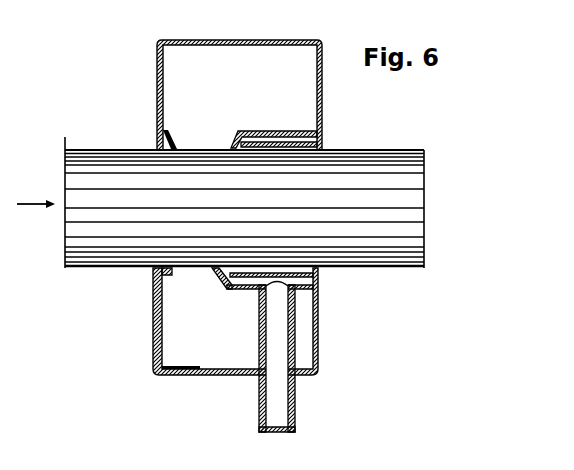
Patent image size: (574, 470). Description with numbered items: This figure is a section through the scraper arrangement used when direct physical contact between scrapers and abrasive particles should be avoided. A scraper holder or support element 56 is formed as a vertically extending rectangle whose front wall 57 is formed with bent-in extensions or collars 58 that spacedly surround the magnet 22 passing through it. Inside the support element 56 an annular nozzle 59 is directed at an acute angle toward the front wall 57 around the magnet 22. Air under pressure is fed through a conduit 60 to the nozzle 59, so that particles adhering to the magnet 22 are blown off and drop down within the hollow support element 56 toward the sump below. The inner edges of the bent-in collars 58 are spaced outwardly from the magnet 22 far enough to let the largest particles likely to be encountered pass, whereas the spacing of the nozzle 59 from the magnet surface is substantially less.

The magnet 22 is at (93, 168).
The scraper holder or support element 56 is at (318, 352).
The front wall 57 is at (153, 344).
The bent-in extensions or collars 58 is at (170, 272).
The annular nozzle 59 is at (318, 287).
The conduit 60 is at (284, 405).